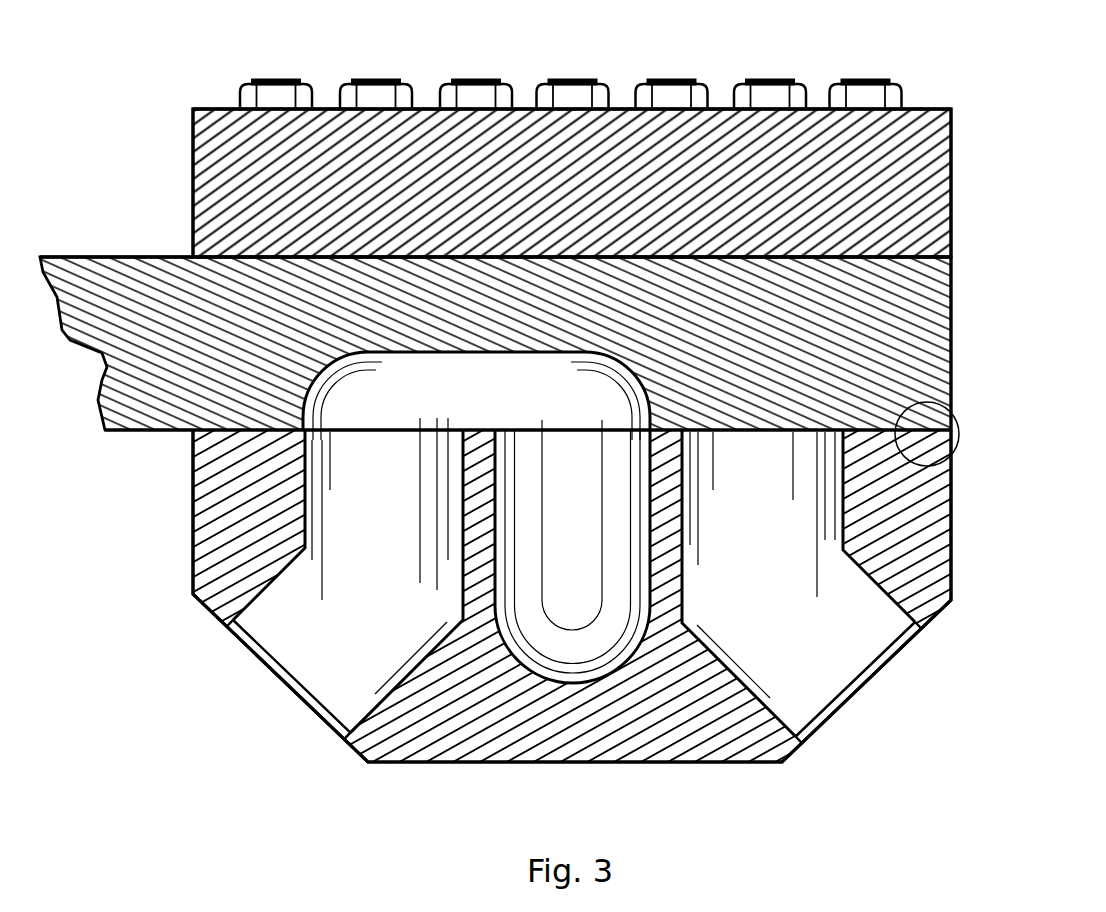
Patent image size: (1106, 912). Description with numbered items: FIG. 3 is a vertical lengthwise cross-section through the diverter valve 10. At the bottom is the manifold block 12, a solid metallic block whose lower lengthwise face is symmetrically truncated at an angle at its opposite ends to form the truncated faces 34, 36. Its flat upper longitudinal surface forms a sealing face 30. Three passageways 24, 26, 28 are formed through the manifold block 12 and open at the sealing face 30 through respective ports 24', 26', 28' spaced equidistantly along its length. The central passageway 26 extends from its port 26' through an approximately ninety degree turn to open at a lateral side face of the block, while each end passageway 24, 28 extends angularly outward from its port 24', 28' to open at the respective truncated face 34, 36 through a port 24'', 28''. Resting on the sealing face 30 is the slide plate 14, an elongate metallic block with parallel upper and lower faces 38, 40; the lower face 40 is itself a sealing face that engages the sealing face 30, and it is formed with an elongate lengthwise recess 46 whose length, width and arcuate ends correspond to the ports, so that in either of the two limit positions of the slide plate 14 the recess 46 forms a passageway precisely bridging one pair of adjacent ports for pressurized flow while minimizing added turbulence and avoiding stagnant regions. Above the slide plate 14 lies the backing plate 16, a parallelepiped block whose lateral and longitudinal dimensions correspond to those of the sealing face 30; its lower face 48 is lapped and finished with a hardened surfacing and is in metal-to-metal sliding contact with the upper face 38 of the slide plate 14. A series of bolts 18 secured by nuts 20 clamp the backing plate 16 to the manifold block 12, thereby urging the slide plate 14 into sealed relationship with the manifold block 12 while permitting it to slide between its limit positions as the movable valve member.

The diverter valve 10 is at (1000, 557).
The manifold block 12 is at (951, 510).
The slide plate 14 is at (951, 354).
The backing plate 16 is at (951, 200).
The bolts 18 is at (566, 78).
The nuts 20 is at (610, 100).
The passageway 24 is at (348, 581).
The port 24' is at (380, 509).
The port 24'' is at (260, 679).
The central passageway 26 is at (572, 556).
The port 26' is at (572, 546).
The passageway 28 is at (798, 583).
The port 28' is at (762, 514).
The port 28'' is at (890, 682).
The sealing face 30 is at (905, 432).
The truncated face 34 is at (193, 605).
The truncated face 36 is at (942, 611).
The upper face 38 is at (905, 258).
The lower face 40 is at (905, 430).
The recess 46 is at (562, 396).
The lower face 48 is at (920, 257).